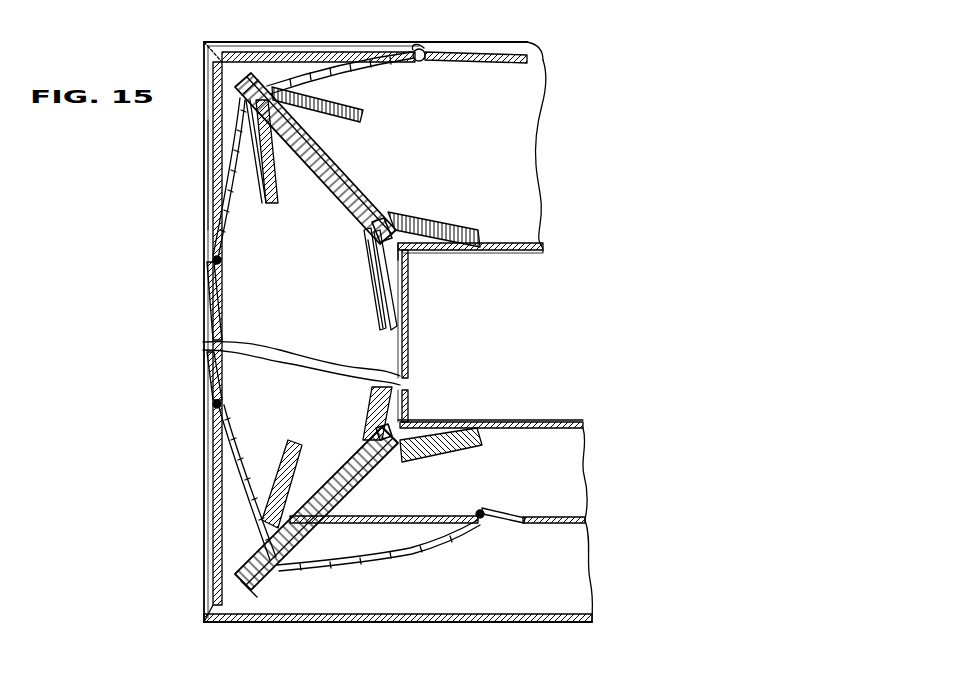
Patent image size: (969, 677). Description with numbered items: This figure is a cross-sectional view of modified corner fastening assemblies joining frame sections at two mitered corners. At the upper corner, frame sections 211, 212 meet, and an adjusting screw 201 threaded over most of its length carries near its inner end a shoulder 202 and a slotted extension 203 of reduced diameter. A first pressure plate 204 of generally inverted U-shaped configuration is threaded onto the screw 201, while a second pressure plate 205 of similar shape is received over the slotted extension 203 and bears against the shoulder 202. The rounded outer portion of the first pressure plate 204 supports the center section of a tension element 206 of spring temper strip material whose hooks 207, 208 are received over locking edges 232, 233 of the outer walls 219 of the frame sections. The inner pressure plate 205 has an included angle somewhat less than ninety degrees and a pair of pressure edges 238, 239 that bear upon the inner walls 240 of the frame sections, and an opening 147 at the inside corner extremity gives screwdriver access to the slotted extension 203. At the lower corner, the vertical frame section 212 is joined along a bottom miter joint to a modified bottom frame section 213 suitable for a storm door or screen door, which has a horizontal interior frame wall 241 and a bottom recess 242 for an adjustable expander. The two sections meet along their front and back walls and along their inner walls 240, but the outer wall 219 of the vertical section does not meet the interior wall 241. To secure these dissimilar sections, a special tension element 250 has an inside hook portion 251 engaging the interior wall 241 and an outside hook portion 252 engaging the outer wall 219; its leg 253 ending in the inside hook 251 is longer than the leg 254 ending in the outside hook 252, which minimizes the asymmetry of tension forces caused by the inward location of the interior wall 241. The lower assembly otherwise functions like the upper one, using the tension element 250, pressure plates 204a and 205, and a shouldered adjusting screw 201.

The opening 147 is at (408, 253).
The adjusting screw 201 is at (335, 168).
The shoulder 202 is at (390, 210).
The slotted extension 203 is at (418, 210).
The first pressure plate 204 is at (347, 102).
The pressure plate 204a is at (373, 510).
The second pressure plate 205 is at (375, 283).
The tension element 206 is at (214, 172).
The hook 207 is at (423, 62).
The hook 208 is at (218, 260).
The frame section 211 is at (520, 153).
The vertical frame section 212 is at (377, 353).
The bottom frame section 213 is at (567, 468).
The outer wall 219 is at (250, 55).
The locking edge 232 is at (214, 258).
The locking edge 233 is at (412, 52).
The pressure edge 238 is at (408, 327).
The pressure edge 239 is at (480, 249).
The inner wall 240 is at (545, 251).
The horizontal interior frame wall 241 is at (570, 517).
The bottom recess 242 is at (570, 588).
The tension element 250 is at (400, 566).
The inside hook portion 251 is at (488, 521).
The outside hook portion 252 is at (218, 405).
The leg 253 is at (432, 548).
The leg 254 is at (243, 447).